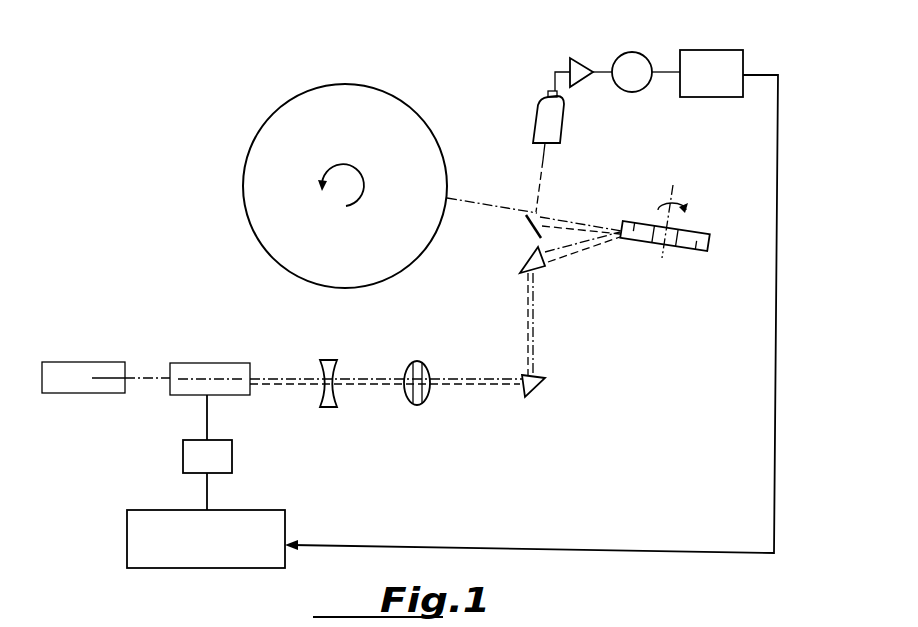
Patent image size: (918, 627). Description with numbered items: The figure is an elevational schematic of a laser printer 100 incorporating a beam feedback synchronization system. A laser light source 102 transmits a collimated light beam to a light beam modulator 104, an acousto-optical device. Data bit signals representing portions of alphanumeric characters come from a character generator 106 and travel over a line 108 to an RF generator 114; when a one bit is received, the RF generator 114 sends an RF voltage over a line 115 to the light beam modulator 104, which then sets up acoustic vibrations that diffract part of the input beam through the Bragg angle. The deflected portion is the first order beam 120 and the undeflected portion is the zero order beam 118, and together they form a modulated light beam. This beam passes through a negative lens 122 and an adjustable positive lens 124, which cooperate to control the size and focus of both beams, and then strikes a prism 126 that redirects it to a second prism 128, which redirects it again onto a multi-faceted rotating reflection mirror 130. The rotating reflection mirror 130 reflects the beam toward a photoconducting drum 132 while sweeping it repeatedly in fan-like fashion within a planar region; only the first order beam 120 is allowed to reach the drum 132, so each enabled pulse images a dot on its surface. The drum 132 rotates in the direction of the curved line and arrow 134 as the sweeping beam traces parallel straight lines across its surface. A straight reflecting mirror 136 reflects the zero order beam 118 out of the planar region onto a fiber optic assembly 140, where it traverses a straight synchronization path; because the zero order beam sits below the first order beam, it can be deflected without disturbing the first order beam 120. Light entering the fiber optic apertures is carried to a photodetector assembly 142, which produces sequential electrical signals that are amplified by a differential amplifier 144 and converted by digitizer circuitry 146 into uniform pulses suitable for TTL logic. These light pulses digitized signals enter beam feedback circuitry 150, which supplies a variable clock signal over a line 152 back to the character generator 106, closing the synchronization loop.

The laser printer 100 is at (500, 422).
The laser light source 102 is at (80, 362).
The light beam modulator 104 is at (200, 363).
The character generator 106 is at (127, 538).
The line 108 is at (208, 492).
The RF generator 114 is at (183, 458).
The line 115 is at (207, 416).
The zero order beam 118 is at (378, 385).
The first order beam 120 is at (497, 205).
The negative lens 122 is at (330, 407).
The adjustable positive lens 124 is at (427, 395).
The prism 126 is at (545, 387).
The prism 128 is at (544, 266).
The multi-faceted rotating reflection mirror 130 is at (678, 253).
The photoconducting drum 132 is at (280, 105).
The curved line and arrow 134 is at (358, 168).
The straight reflecting mirror 136 is at (524, 228).
The fiber optic assembly 140 is at (566, 122).
The photodetector assembly 142 is at (548, 92).
The differential amplifier 144 is at (580, 58).
The digitizer circuitry 146 is at (644, 58).
The beam feedback circuitry 150 is at (755, 52).
The line 152 is at (776, 420).